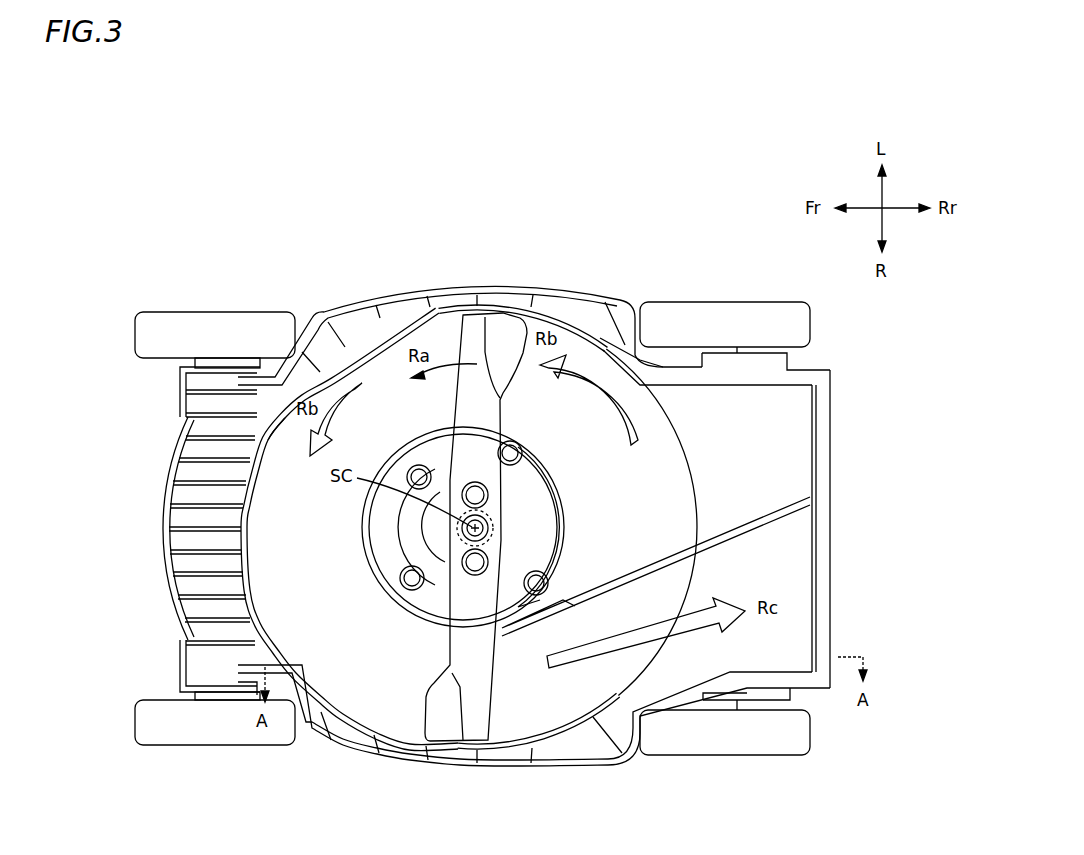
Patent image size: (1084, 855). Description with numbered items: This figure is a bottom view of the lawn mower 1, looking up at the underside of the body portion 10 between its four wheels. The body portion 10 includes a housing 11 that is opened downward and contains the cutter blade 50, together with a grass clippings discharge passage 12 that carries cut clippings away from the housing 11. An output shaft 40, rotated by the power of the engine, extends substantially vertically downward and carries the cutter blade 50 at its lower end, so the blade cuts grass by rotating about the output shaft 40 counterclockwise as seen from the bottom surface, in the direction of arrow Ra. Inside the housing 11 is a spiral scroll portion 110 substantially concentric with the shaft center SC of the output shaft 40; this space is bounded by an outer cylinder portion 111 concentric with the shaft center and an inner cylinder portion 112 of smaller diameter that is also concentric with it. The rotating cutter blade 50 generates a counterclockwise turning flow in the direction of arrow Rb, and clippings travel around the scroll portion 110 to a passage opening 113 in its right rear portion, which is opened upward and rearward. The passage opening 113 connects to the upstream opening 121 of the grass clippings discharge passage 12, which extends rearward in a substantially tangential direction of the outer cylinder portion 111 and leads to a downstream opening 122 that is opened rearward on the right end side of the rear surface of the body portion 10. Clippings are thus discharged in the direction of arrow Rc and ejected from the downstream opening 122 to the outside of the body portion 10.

The lawn mower 1 is at (98, 319).
The body portion 10 is at (178, 440).
The housing 11 is at (294, 559).
The grass clippings discharge passage 12 is at (788, 573).
The output shaft 40 is at (470, 494).
The cutter blade 50 is at (506, 328).
The scroll portion 110 is at (277, 480).
The outer cylinder portion 111 is at (248, 518).
The inner cylinder portion 112 is at (362, 528).
The passage opening 113 is at (598, 617).
The upstream opening 121 is at (592, 677).
The downstream opening 122 is at (816, 553).